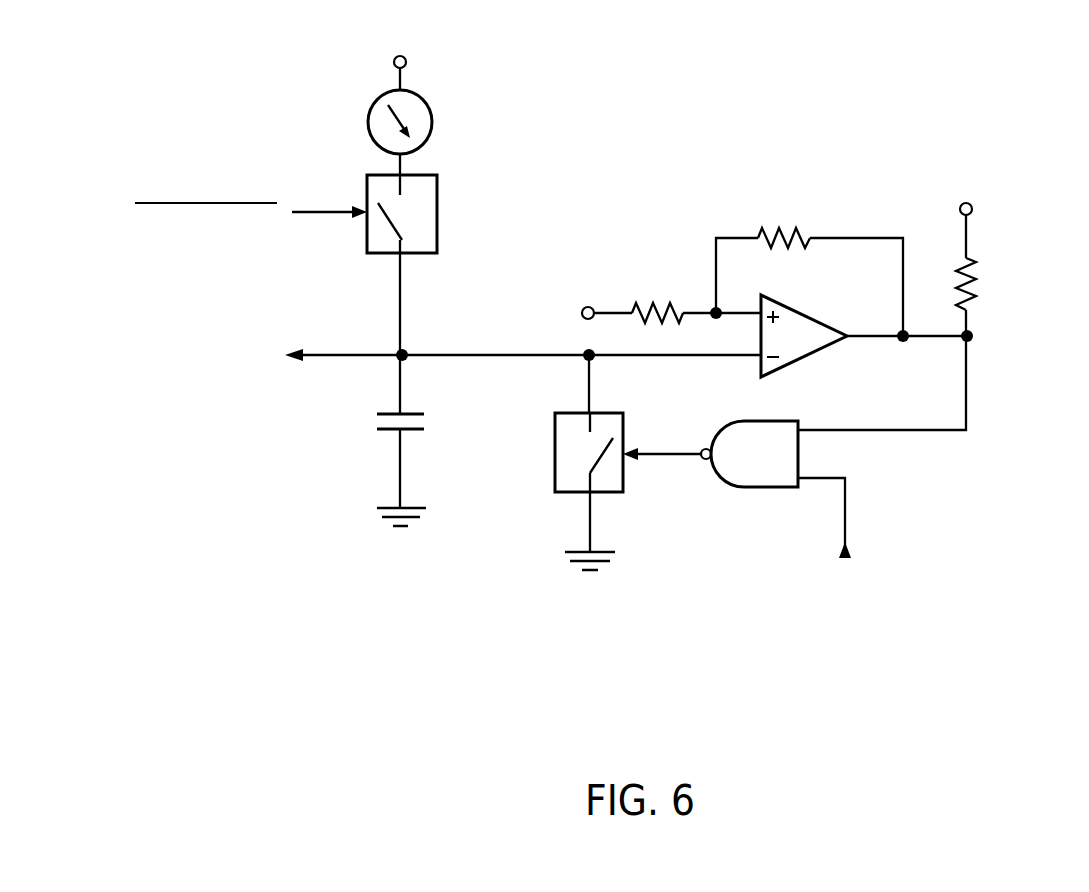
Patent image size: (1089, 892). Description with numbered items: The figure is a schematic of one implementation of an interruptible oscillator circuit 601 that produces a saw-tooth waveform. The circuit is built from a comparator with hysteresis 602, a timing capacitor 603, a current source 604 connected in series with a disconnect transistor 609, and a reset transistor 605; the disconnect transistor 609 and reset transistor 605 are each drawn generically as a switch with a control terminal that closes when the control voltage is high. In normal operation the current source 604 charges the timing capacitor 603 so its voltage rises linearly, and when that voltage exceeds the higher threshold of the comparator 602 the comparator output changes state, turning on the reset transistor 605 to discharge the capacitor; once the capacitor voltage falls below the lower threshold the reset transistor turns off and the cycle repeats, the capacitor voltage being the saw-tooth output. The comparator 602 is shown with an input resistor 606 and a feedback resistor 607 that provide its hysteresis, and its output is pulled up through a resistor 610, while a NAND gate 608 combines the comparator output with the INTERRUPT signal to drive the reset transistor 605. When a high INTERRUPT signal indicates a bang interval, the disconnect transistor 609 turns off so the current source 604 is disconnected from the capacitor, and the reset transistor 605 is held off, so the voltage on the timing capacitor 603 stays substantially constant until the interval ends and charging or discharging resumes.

The oscillator circuit 601 is at (887, 74).
The comparator with hysteresis 602 is at (808, 360).
The timing capacitor 603 is at (392, 432).
The current source 604 is at (433, 117).
The reset transistor 605 is at (612, 495).
The resistor R1 606 is at (673, 323).
The resistor R2 607 is at (798, 248).
The NAND gate 608 is at (773, 492).
The disconnect transistor 609 is at (437, 197).
The pull-up resistor 610 is at (975, 288).